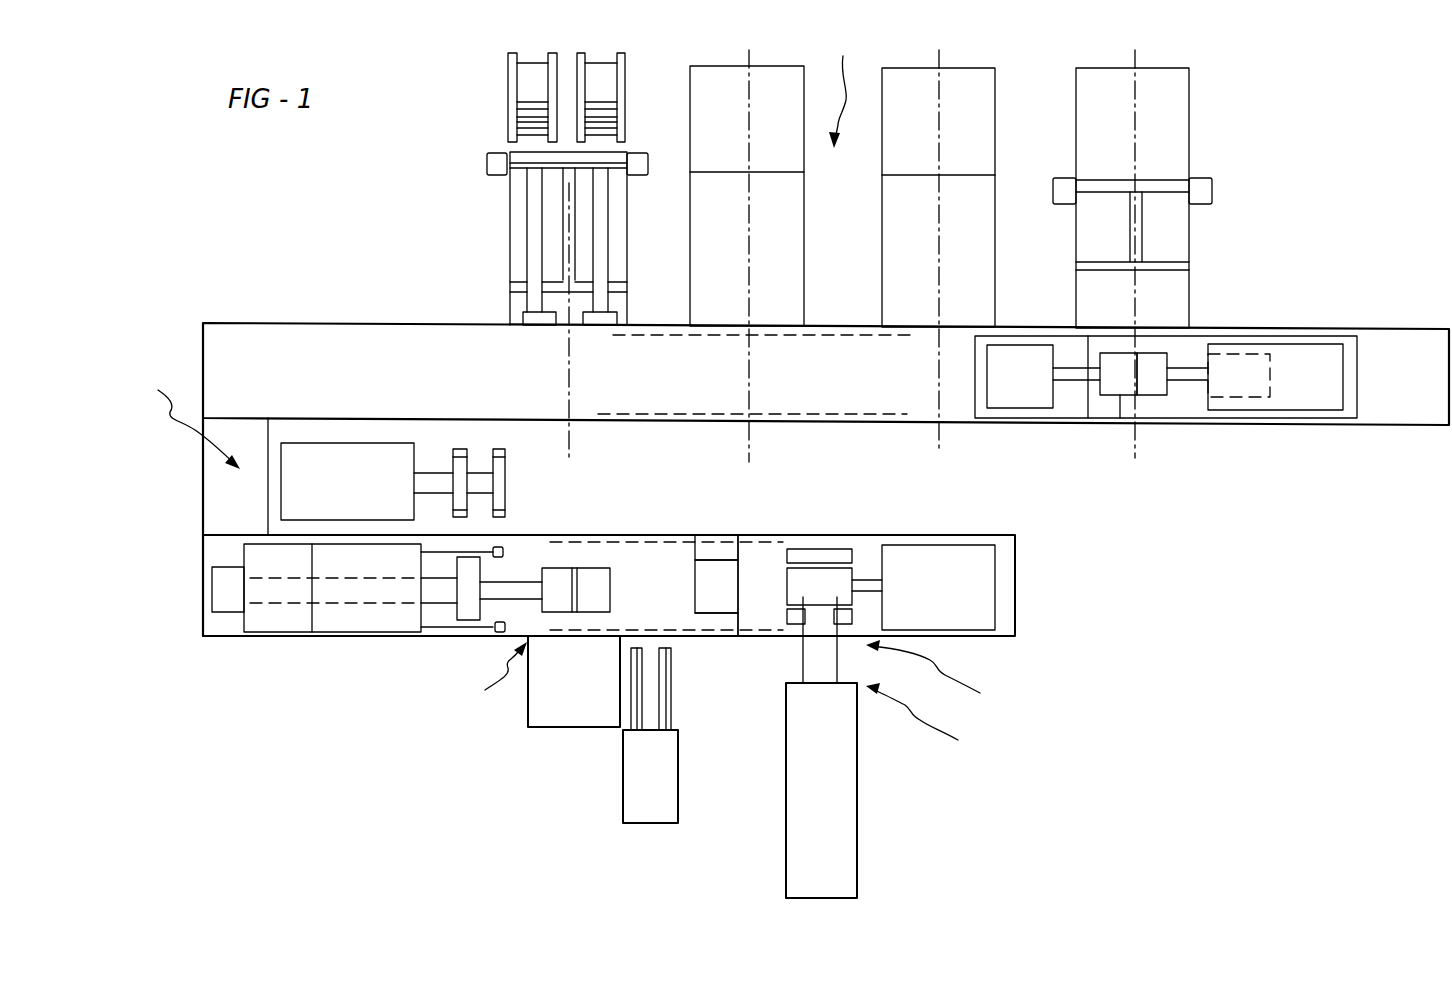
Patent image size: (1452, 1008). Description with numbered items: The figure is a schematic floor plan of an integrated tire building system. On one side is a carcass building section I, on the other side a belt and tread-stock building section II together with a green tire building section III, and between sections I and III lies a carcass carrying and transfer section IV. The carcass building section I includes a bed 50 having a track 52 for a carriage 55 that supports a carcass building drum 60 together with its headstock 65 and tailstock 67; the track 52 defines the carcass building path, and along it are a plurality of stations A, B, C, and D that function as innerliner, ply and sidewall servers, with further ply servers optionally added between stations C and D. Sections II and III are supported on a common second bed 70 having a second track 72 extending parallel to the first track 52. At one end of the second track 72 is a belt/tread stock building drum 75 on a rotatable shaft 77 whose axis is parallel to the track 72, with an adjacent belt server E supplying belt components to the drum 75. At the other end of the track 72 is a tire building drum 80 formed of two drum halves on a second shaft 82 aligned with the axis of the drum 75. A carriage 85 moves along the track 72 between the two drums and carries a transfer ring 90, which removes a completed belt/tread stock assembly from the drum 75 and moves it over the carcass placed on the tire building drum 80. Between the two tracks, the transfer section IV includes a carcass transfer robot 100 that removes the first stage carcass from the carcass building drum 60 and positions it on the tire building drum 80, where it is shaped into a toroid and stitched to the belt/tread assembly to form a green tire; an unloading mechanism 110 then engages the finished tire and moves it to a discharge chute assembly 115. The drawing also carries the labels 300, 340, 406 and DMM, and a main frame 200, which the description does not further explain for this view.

The bed 50 is at (432, 325).
The track 52 is at (822, 415).
The carriage 55 is at (1182, 402).
The carcass building drum 60 is at (1118, 394).
The headstock 65 is at (1308, 358).
The tailstock 67 is at (1017, 400).
The second bed 70 is at (758, 538).
The second track 72 is at (637, 537).
The belt/tread stock building drum 75 is at (850, 546).
The rotatable shaft 77 is at (873, 587).
The tire building drum 80 is at (543, 549).
The second shaft 82 is at (425, 642).
The carriage 85 is at (720, 546).
The transfer ring 90 is at (708, 592).
The carcass transfer robot 100 is at (441, 454).
The unloading mechanism 110 is at (445, 597).
The discharge chute assembly 115 is at (630, 715).
The main frame 200 is at (1190, 367).
The lower housing 300 is at (307, 528).
The cylinder 340 is at (355, 617).
The motor box 406 is at (985, 600).
The digital multimeter DMM is at (1232, 387).
The station A is at (1132, 240).
The station B is at (938, 238).
The station C is at (747, 243).
The station D is at (567, 241).
The belt server E is at (881, 747).
The carcass building section I is at (837, 87).
The belt and tread-stock building section II is at (930, 678).
The green tire building section III is at (492, 674).
The carcass carrying and transfer section IV is at (339, 437).